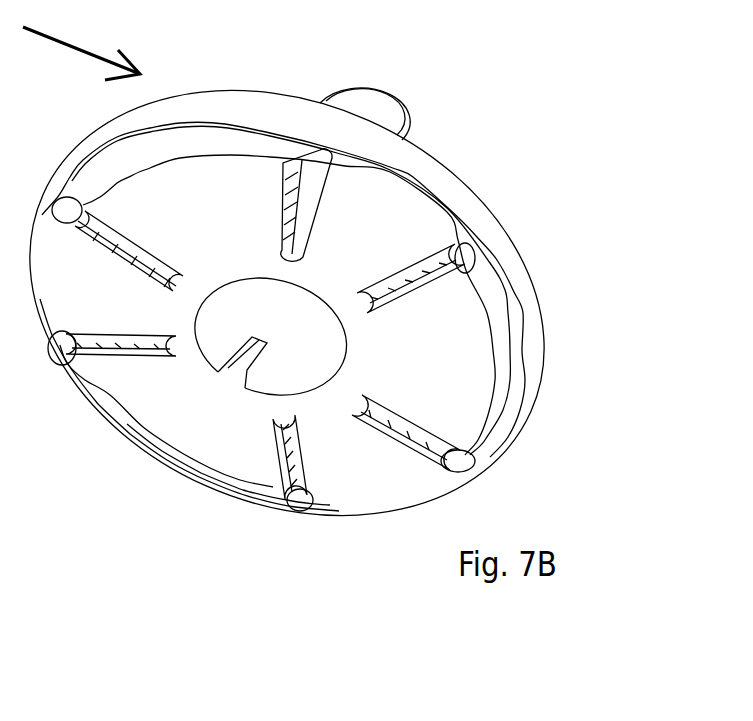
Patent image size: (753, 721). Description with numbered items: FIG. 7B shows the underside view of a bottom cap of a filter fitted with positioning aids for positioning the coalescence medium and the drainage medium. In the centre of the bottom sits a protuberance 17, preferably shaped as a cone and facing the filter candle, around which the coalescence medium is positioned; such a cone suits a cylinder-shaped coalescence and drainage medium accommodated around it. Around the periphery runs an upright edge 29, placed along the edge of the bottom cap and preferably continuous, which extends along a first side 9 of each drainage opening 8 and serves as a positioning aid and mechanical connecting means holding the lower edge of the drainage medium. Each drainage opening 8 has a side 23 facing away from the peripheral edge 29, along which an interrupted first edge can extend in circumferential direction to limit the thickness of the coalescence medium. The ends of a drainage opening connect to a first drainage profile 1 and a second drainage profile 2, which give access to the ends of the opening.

The first drainage profile 1 is at (115, 248).
The second drainage profile 2 is at (300, 215).
The drainage opening 8 is at (200, 140).
The first side of the drainage opening 9 is at (527, 355).
The protuberance 17 is at (364, 98).
The side of the drainage openings facing away from the peripheral edge 23 is at (487, 320).
The upright edge 29 is at (445, 192).